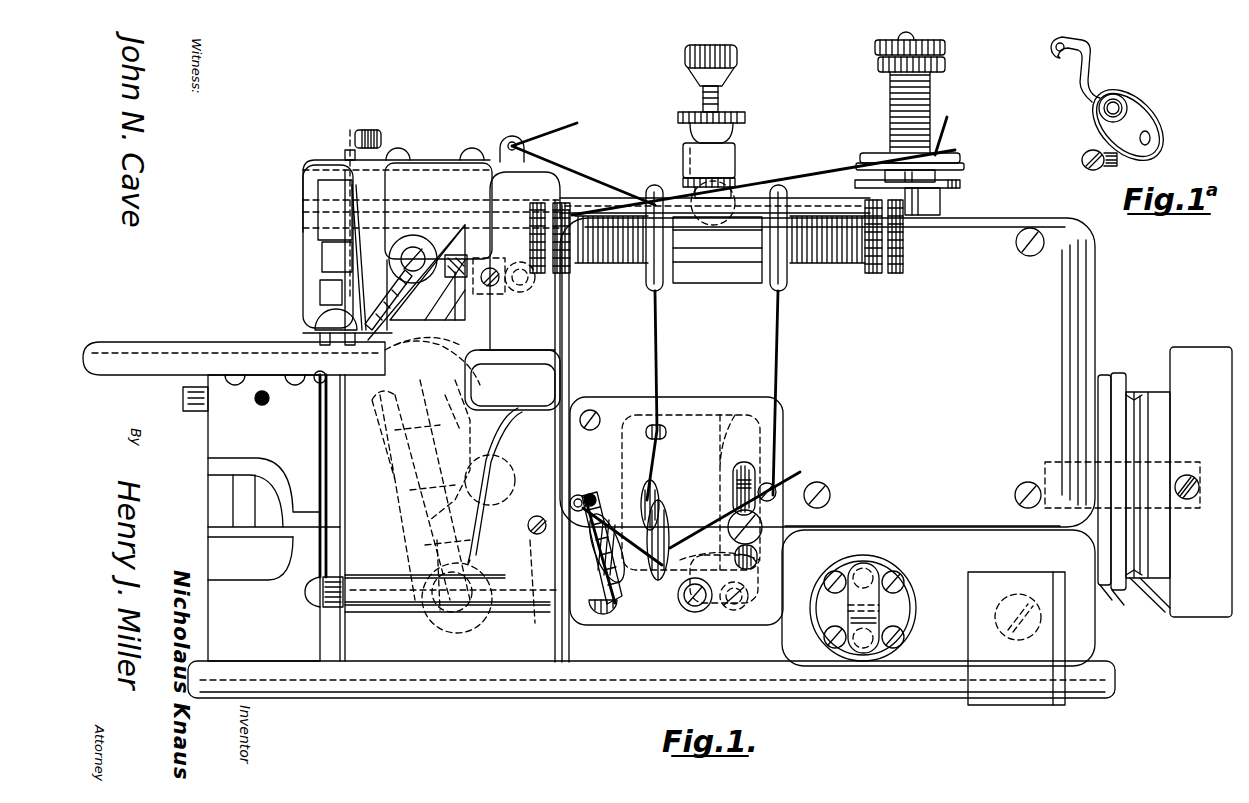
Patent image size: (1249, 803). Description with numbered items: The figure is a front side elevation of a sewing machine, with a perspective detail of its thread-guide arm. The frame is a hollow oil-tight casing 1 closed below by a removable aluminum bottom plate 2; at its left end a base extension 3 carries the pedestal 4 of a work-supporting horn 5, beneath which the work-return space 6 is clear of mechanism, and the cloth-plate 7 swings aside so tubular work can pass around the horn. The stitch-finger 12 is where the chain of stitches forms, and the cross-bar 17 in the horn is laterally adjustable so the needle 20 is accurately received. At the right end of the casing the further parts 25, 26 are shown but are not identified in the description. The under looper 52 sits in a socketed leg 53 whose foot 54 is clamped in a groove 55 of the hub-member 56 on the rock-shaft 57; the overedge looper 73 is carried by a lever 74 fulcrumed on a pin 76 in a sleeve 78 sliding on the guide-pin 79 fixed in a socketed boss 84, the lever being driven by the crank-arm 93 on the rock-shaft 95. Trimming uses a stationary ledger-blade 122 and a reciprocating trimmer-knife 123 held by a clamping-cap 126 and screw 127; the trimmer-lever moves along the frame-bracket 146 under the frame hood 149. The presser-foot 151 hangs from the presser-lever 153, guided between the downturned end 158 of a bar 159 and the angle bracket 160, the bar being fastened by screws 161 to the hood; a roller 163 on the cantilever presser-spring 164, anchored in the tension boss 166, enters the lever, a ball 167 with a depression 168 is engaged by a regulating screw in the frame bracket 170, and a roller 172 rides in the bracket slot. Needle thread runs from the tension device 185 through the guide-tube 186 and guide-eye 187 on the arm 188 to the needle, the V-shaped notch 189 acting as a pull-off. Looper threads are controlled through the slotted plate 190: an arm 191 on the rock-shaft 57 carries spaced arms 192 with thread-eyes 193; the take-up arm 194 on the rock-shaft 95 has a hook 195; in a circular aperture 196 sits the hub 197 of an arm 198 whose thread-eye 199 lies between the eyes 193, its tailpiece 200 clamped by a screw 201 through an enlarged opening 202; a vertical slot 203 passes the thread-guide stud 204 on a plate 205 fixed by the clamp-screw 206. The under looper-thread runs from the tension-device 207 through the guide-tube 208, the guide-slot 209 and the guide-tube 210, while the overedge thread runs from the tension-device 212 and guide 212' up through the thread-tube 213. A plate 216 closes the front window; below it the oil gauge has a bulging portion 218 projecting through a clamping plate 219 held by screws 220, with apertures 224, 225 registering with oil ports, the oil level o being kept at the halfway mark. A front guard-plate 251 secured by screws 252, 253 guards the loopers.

In FIG. 1, the hollow oil-tight casing 1 is at (548, 200).
In FIG. 1, the bottom plate 2 is at (878, 690).
In FIG. 1, the base extension 3 is at (300, 670).
In FIG. 1, the pedestal 4 is at (345, 540).
In FIG. 1, the work-supporting horn 5 is at (228, 372).
In FIG. 1, the work-return space 6 is at (232, 578).
In FIG. 1, the cloth-plate 7 is at (142, 342).
In FIG. 1, the stitch-finger 12 is at (382, 236).
In FIG. 1, the cross-bar 17 is at (266, 406).
In FIG. 1, the needle 20 is at (322, 293).
In FIG. 1, the screw 25 is at (1146, 463).
In FIG. 1, the cylinder 26 is at (1138, 395).
In FIG. 1, the under looper 52 is at (430, 352).
In FIG. 1, the socketed leg 53 is at (425, 476).
In FIG. 1, the foot 54 is at (440, 532).
In FIG. 1, the groove 55 is at (455, 552).
In FIG. 1, the hub-member 56 is at (455, 630).
In FIG. 1, the rock-shaft 57 is at (440, 602).
In FIG. 1, the overedge looper 73 is at (325, 310).
In FIG. 1, the overedge looper-lever 74 is at (462, 398).
In FIG. 1, the fulcrum-pin 76 is at (470, 520).
In FIG. 1, the sleeve 78 is at (676, 511).
In FIG. 1, the guide-pin 79 is at (545, 420).
In FIG. 1, the socketed boss 84 is at (540, 395).
In FIG. 1, the crank-arm 93 is at (615, 612).
In FIG. 1, the rock-shaft 95 is at (706, 615).
In FIG. 1, the ledger-blade 122 is at (320, 372).
In FIG. 1, the trimmer-knife 123 is at (452, 312).
In FIG. 1, the clamping-cap 126 is at (420, 248).
In FIG. 1, the screw 127 is at (430, 264).
In FIG. 1, the frame-bracket 146 is at (522, 293).
In FIG. 1, the frame hood 149 is at (432, 165).
In FIG. 1, the presser-foot 151 is at (320, 322).
In FIG. 1, the presser-lever 153 is at (322, 256).
In FIG. 1, the downturned end 158 is at (303, 213).
In FIG. 1, the bar 159 is at (318, 162).
In FIG. 1, the angle bracket 160 is at (325, 190).
In FIG. 1, the screws 161 is at (392, 152).
In FIG. 1, the roller 163 is at (322, 238).
In FIG. 1, the cantilever presser-spring 164 is at (815, 196).
In FIG. 1, the tension boss 166 is at (940, 205).
In FIG. 1, the ball 167 is at (725, 196).
In FIG. 1, the depression 168 is at (705, 220).
In FIG. 1, the frame bracket 170 is at (737, 150).
In FIG. 1, the roller 172 is at (318, 246).
In FIG. 1, the tension device 185 is at (940, 152).
In FIG. 1, the guide-tube 186 is at (528, 190).
In FIG. 1, the guide-eye 187 is at (360, 200).
In FIG. 1, the arm 188 is at (350, 130).
In FIG. 1, the V-shaped notch 189 is at (345, 262).
In FIG. 1, the slotted plate 190 is at (770, 452).
In FIG. 1, the arm 191 is at (528, 639).
In FIG. 1, the take-up arms 192 is at (586, 503).
In FIG. 1, the thread-eyes 193 is at (648, 556).
In FIG. 1, the thread-take-up arm 194 is at (688, 580).
In FIG. 1, the hook 195 is at (598, 604).
In FIG. 1, the circular aperture 196 is at (690, 610).
In FIG. 1, the hub 197 is at (692, 600).
In FIG. 1A, the hub 197 is at (1100, 112).
In FIG. 1, the arm 198 is at (652, 612).
In FIG. 1A, the arm 198 is at (1088, 68).
In FIG. 1, the thread-eye 199 is at (690, 560).
In FIG. 1A, the thread-eye 199 is at (1062, 54).
In FIG. 1, the tailpiece 200 is at (736, 612).
In FIG. 1A, the tailpiece 200 is at (1150, 130).
In FIG. 1, the clamping screw 201 is at (760, 586).
In FIG. 1A, the clamping screw 201 is at (1083, 163).
In FIG. 1, the enlarged opening 202 is at (808, 606).
In FIG. 1, the vertical slot 203 is at (776, 492).
In FIG. 1, the thread-guide stud 204 is at (756, 482).
In FIG. 1, the plate 205 is at (760, 440).
In FIG. 1, the clamp-screw 206 is at (763, 528).
In FIG. 1, the tension-device 207 is at (787, 277).
In FIG. 1, the guide-tube 208 is at (318, 608).
In FIG. 1, the guide-slot 209 is at (316, 437).
In FIG. 1, the guide-tube 210 is at (313, 384).
In FIG. 1, the tension-device 212 is at (640, 342).
In FIG. 1, the guide 212' is at (678, 432).
In FIG. 1, the thread-tube 213 is at (586, 492).
In FIG. 1, the plate 216 is at (1065, 290).
In FIG. 1, the bulging diametrical portion 218 is at (882, 623).
In FIG. 1, the clamping plate 219 is at (905, 609).
In FIG. 1, the screws 220 is at (904, 642).
In FIG. 1, the aperture 224 is at (876, 568).
In FIG. 1, the aperture 225 is at (872, 652).
In FIG. 1, the front guard-plate 251 is at (560, 340).
In FIG. 1, the screw 252 is at (490, 286).
In FIG. 1, the screw 253 is at (533, 531).
In FIG. 1, the oil level o is at (880, 606).